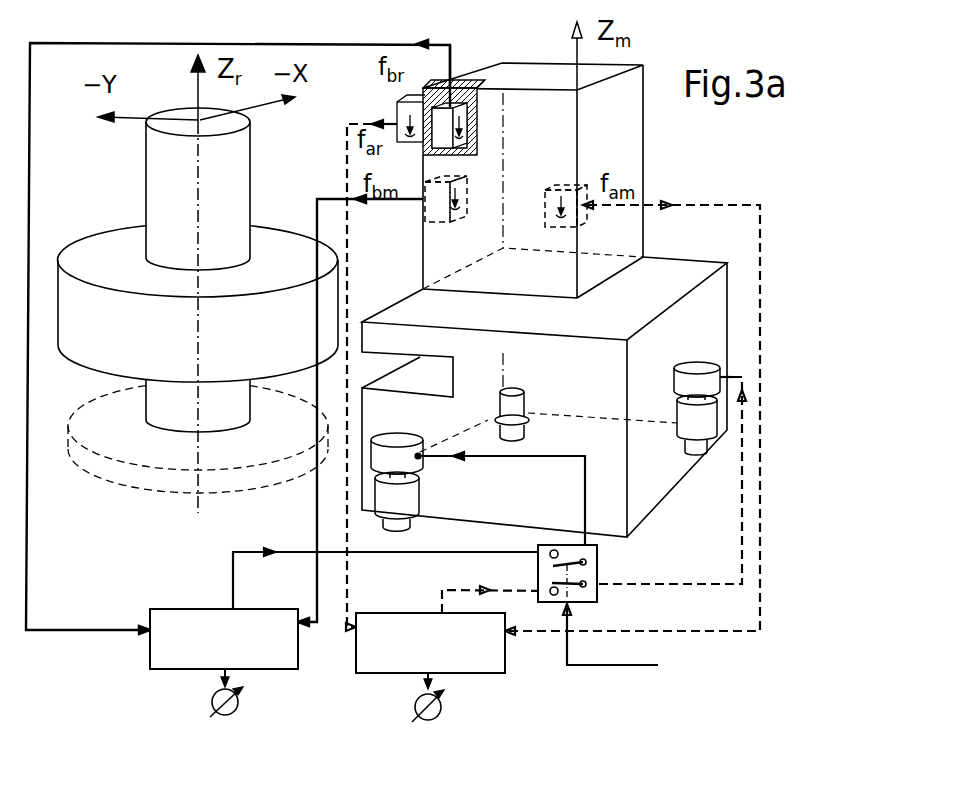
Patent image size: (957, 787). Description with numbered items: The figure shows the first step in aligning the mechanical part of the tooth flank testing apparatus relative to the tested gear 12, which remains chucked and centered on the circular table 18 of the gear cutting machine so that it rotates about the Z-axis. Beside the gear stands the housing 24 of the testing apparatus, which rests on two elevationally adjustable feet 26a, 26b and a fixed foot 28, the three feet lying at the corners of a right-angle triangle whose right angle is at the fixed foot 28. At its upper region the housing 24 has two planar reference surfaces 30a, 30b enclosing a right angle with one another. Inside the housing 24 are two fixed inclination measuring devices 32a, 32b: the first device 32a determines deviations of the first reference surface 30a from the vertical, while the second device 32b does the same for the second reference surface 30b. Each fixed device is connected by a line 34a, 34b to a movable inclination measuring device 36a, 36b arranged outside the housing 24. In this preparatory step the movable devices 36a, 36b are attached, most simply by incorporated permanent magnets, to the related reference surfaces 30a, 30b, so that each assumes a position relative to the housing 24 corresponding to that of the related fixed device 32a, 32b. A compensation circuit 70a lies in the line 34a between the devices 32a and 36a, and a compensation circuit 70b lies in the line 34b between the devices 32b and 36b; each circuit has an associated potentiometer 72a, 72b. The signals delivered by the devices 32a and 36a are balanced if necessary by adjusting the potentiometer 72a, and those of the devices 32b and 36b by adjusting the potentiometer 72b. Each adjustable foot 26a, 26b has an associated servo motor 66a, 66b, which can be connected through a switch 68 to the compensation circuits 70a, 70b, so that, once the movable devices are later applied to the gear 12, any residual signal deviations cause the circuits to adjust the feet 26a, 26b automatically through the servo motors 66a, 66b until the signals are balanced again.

The tested gear 12 is at (91, 222).
The circular table 18 is at (145, 480).
The housing 24 is at (660, 66).
The adjustable foot 26a is at (693, 450).
The adjustable foot 26b is at (405, 523).
The fixed foot 28 is at (523, 407).
The first reference surface 30a is at (455, 80).
The second reference surface 30b is at (474, 107).
The first fixed inclination measuring device 32a is at (558, 223).
The second fixed inclination measuring device 32b is at (457, 219).
The line 34a is at (760, 227).
The line 34b is at (317, 213).
The movable inclination measuring device 36a is at (399, 107).
The movable inclination measuring device 36b is at (477, 132).
The servo motor 66a is at (698, 365).
The servo motor 66b is at (400, 442).
The switch 68 is at (597, 570).
The compensation circuit 70a is at (505, 660).
The compensation circuit 70b is at (148, 665).
The potentiometer 72a is at (430, 720).
The potentiometer 72b is at (227, 716).